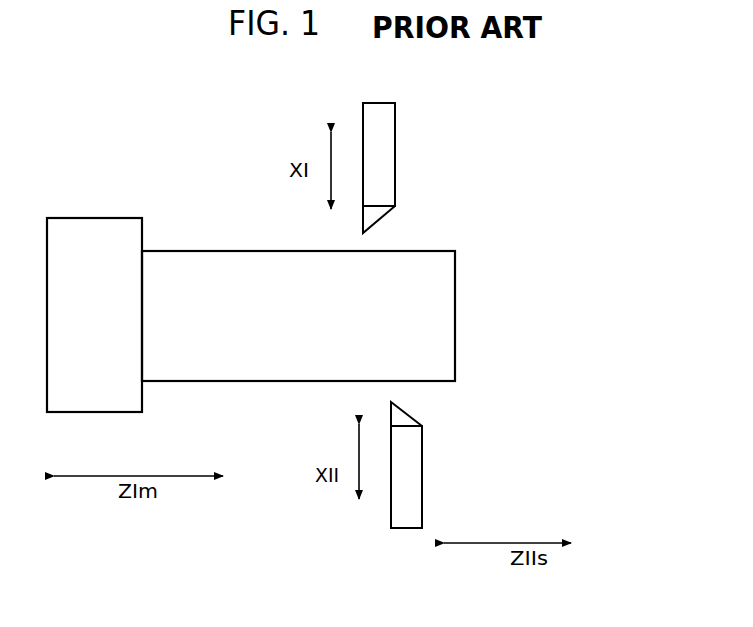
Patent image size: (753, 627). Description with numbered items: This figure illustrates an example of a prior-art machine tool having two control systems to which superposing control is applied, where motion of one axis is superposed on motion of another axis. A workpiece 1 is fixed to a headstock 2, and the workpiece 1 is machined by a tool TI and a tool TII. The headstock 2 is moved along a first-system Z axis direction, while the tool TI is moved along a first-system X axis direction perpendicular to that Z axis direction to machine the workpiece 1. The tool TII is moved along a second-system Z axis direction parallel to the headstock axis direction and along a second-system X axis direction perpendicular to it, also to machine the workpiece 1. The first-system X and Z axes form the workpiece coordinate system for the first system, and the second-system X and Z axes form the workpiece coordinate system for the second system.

The workpiece 1 is at (240, 377).
The headstock 2 is at (84, 218).
The tool TI is at (390, 143).
The tool TII is at (393, 528).